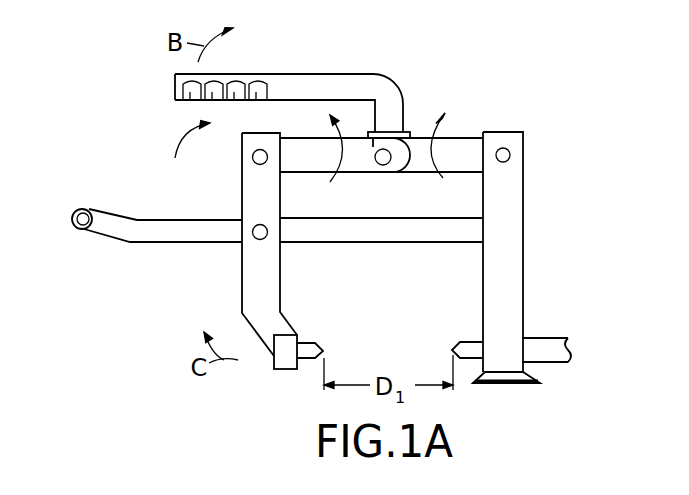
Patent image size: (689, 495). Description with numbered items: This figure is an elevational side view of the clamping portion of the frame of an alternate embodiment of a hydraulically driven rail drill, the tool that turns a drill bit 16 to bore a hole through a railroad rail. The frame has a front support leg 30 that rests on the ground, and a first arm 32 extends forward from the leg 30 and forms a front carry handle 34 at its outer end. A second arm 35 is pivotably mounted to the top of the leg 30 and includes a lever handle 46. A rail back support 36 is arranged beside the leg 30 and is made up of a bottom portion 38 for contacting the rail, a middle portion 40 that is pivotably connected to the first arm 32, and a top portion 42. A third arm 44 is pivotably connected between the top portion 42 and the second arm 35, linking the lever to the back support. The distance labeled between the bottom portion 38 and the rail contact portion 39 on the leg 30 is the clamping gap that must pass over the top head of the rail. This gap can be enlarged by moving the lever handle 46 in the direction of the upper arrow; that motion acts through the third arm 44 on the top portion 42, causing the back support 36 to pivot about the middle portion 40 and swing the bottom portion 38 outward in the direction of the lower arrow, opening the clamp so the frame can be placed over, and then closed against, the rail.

The drill bit 16 is at (543, 338).
The front support leg 30 is at (523, 241).
The first arm 32 is at (160, 219).
The front carry handle 34 is at (75, 224).
The second arm 35 is at (423, 175).
The rail back support 36 is at (242, 288).
The bottom portion 38 is at (318, 345).
The rail contact portion 39 is at (458, 342).
The middle portion 40 is at (265, 238).
The top portion 42 is at (243, 168).
The third arm 44 is at (298, 175).
The lever handle 46 is at (175, 90).